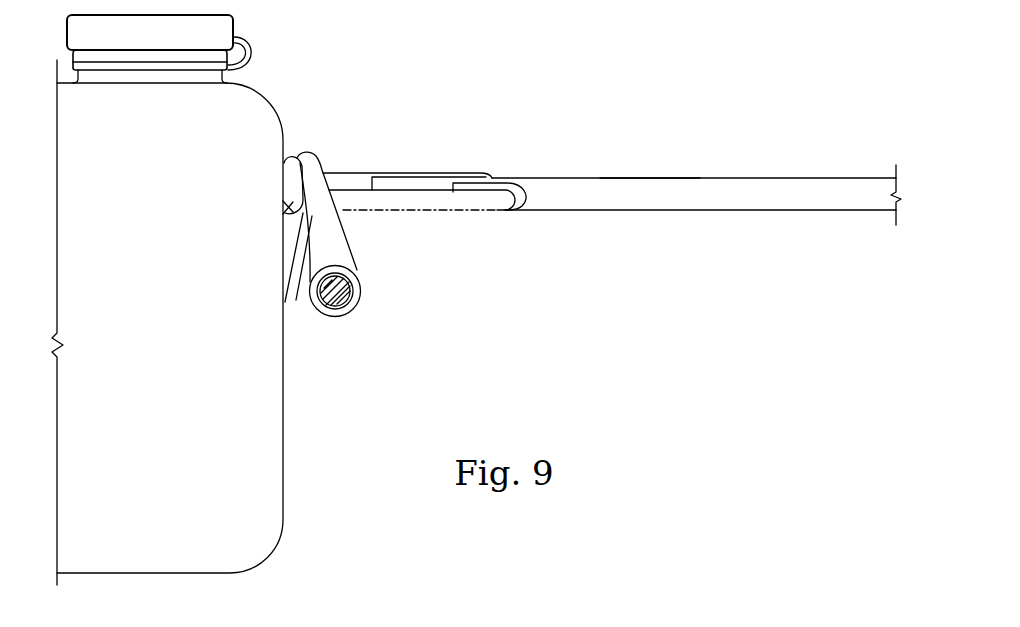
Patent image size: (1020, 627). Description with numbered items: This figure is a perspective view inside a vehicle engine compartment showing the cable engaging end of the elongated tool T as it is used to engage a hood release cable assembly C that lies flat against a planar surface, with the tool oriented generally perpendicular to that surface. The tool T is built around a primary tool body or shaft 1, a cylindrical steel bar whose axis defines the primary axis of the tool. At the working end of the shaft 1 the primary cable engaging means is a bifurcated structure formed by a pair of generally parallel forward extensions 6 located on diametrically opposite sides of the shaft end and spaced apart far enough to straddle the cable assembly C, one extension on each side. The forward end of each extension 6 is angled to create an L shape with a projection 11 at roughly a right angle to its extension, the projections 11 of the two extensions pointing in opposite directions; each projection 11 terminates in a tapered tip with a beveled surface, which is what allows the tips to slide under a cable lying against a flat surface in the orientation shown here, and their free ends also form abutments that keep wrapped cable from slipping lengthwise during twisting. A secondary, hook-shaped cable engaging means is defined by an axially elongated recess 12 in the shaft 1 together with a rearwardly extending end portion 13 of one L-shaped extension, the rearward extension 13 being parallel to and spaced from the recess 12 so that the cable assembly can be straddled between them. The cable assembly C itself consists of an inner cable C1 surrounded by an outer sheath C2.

The primary tool body or shaft 1 is at (622, 192).
The forward extensions 6 is at (363, 202).
The projection 11 is at (292, 188).
The axially elongated recess 12 is at (503, 188).
The rearwardly extending end portion 13 is at (470, 203).
The hood release cable assembly C is at (348, 255).
The cable C1 is at (333, 303).
The sheath C2 is at (357, 297).
The elongated tool T is at (747, 173).